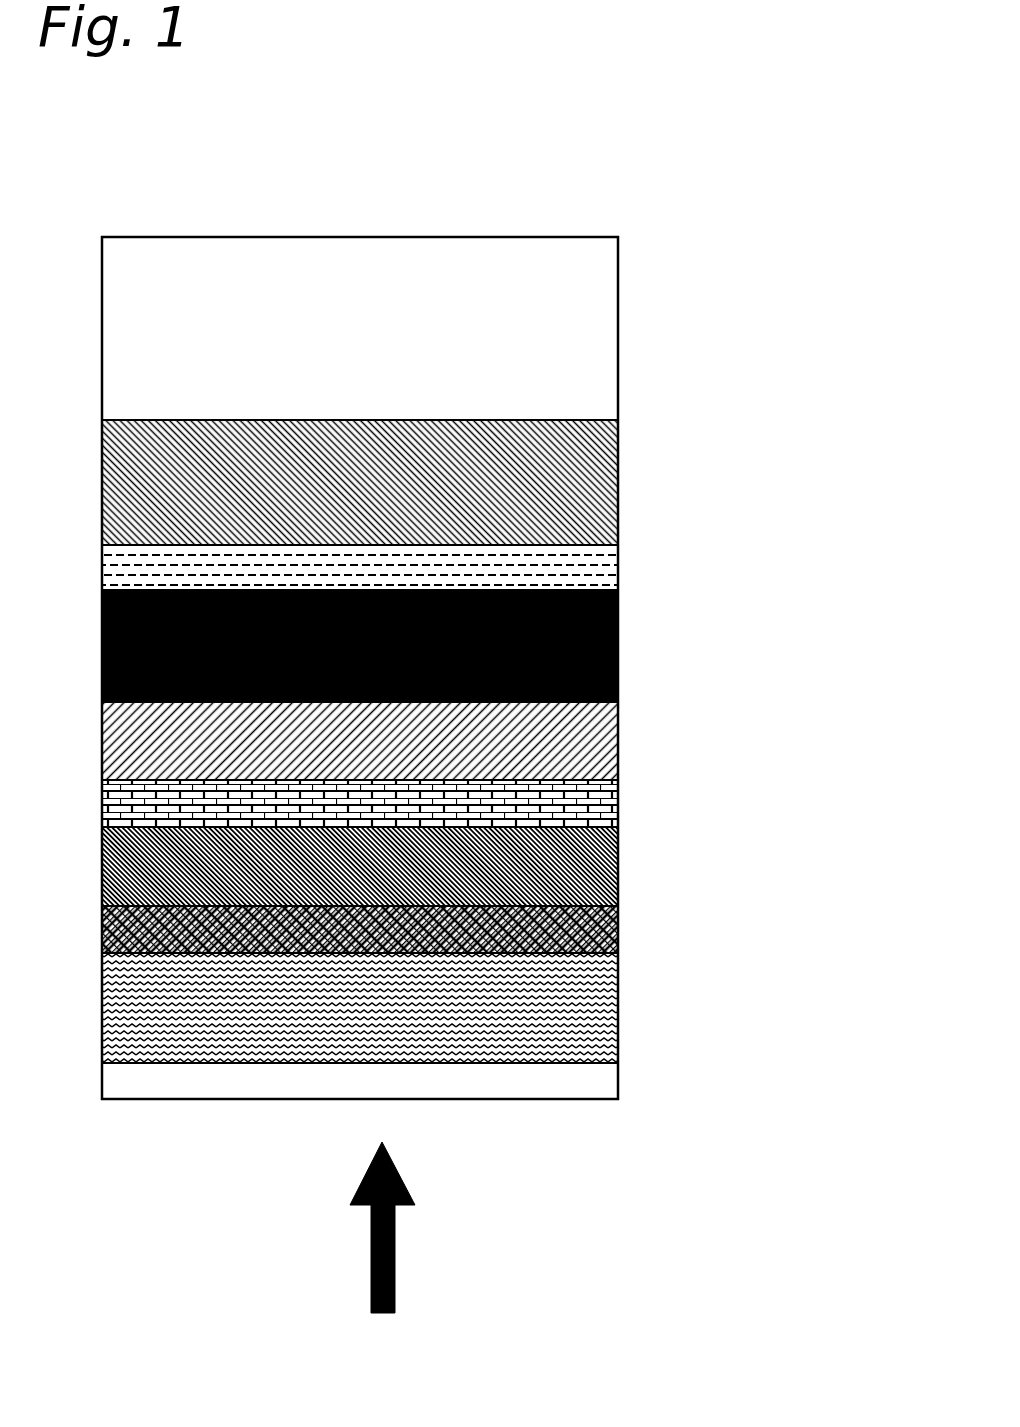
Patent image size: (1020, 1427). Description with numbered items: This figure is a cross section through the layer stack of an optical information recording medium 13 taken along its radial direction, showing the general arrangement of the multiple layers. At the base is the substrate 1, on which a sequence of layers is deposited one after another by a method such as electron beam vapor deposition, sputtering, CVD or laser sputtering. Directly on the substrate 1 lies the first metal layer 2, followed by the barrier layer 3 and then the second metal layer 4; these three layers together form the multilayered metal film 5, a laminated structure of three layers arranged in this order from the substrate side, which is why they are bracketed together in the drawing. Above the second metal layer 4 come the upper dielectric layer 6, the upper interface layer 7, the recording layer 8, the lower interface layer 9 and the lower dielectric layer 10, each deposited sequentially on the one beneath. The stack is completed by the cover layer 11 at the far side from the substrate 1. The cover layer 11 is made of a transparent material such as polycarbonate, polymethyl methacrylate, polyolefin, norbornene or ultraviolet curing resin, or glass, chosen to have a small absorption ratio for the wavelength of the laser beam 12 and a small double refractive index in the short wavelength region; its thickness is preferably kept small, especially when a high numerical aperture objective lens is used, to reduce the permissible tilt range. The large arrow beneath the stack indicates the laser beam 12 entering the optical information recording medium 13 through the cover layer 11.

The substrate 1 is at (628, 327).
The first metal layer 2 is at (628, 482).
The barrier layer 3 is at (628, 566).
The second metal layer 4 is at (439, 646).
The multilayered metal film 5 is at (510, 561).
The upper dielectric layer 6 is at (633, 738).
The upper interface layer 7 is at (636, 804).
The recording layer 8 is at (636, 867).
The lower interface layer 9 is at (636, 927).
The lower dielectric layer 10 is at (639, 1005).
The cover layer 11 is at (639, 1080).
The laser beam 12 is at (457, 1250).
The optical information recording medium 13 is at (485, 220).